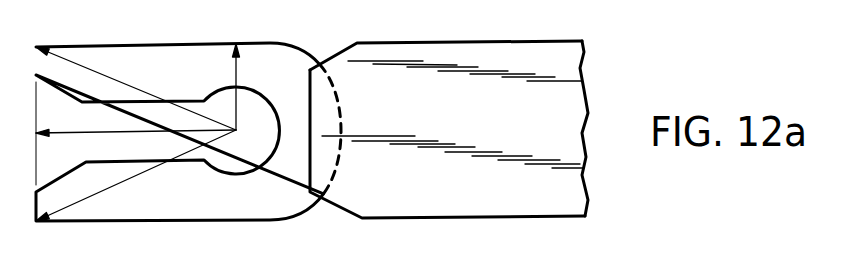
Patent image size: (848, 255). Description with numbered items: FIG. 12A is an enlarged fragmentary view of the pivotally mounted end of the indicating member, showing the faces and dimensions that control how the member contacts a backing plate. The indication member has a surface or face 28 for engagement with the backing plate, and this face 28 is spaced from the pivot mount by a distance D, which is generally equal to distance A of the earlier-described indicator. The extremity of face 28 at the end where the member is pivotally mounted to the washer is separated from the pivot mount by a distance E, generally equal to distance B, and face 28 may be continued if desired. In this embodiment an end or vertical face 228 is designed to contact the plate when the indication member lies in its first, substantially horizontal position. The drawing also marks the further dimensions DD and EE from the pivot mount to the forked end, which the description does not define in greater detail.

The end or vertical face 228 is at (35, 48).
The face 28 is at (249, 44).
The distance E is at (110, 77).
The distance D is at (236, 66).
The dimension DD (radius to fork root) DD is at (98, 132).
The dimension EE (radius to lower prong tip) EE is at (128, 178).